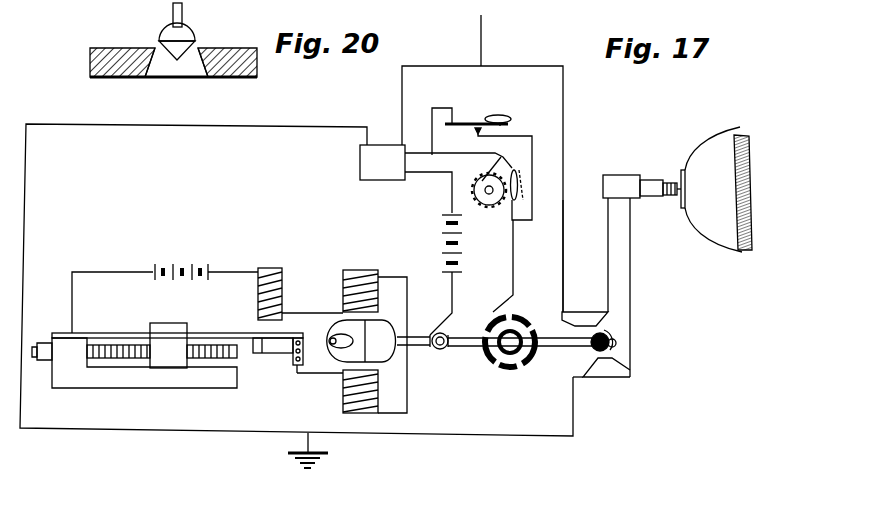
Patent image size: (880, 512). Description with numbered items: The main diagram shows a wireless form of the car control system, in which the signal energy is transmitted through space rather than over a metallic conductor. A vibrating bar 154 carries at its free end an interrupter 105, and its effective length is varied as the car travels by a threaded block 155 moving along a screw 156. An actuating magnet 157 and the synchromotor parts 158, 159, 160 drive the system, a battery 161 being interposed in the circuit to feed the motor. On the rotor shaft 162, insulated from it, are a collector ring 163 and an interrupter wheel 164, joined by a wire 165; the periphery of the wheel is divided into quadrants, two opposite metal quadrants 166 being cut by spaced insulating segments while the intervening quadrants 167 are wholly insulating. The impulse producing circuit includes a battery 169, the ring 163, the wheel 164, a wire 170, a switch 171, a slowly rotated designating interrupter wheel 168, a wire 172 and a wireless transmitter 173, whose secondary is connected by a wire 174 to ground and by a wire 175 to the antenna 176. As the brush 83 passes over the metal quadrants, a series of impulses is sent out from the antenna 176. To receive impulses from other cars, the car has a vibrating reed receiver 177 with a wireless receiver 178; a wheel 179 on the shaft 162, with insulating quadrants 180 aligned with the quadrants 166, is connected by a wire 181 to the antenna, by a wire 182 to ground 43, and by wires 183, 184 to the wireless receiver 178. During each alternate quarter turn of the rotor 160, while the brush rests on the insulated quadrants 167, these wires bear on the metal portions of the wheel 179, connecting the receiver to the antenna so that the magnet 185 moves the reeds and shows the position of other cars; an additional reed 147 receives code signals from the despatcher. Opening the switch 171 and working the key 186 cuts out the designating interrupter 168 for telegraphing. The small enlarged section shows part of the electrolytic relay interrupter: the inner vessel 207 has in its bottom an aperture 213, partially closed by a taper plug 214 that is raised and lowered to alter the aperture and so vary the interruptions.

In FIG. 20, the inner vessel 207 is at (118, 49).
In FIG. 20, the aperture 213 is at (174, 77).
In FIG. 20, the taper plug 214 is at (165, 36).
In FIG. 17, the wire 174 is at (163, 127).
In FIG. 17, the wireless transmitter 173 is at (382, 170).
In FIG. 17, the wire 175 is at (482, 189).
In FIG. 17, the antenna 176 is at (495, 40).
In FIG. 17, the key 186 is at (482, 164).
In FIG. 17, the wire 172 is at (458, 161).
In FIG. 17, the switch 171 is at (515, 178).
In FIG. 17, the designating interrupter wheel 168 is at (489, 198).
In FIG. 17, the battery 169 is at (442, 238).
In FIG. 17, the wire 170 is at (516, 266).
In FIG. 17, the wire 181 is at (563, 226).
In FIG. 17, the wireless receiver 178 is at (632, 178).
In FIG. 17, the magnet 185 is at (675, 198).
In FIG. 17, the vibrating reed receiver 177 is at (711, 189).
In FIG. 17, the additional reed 147 is at (742, 252).
In FIG. 17, the wire 183 is at (608, 262).
In FIG. 17, the wire 184 is at (632, 262).
In FIG. 17, the battery 161 is at (183, 256).
In FIG. 17, the actuating magnet 157 is at (265, 270).
In FIG. 17, the synchromotor part 158 is at (350, 272).
In FIG. 17, the synchromotor part 159 is at (348, 413).
In FIG. 17, the rotor 160 is at (380, 335).
In FIG. 17, the rotor shaft 162 is at (594, 378).
In FIG. 17, the collector ring 163 is at (445, 353).
In FIG. 17, the interrupter wheel 164 is at (496, 370).
In FIG. 17, the brush 83 is at (493, 313).
In FIG. 17, the wire 165 is at (488, 352).
In FIG. 17, the metal quadrants 166 is at (532, 330).
In FIG. 17, the insulating quadrants 167 is at (514, 370).
In FIG. 17, the insulating quadrants 180 is at (595, 331).
In FIG. 17, the wheel 179 is at (617, 354).
In FIG. 17, the wire 182 is at (573, 428).
In FIG. 17, the vibrating bar 154 is at (212, 336).
In FIG. 17, the screw 156 is at (145, 360).
In FIG. 17, the threaded block 155 is at (168, 345).
In FIG. 17, the interrupter 105 is at (292, 360).
In FIG. 17, the ground 43 is at (316, 450).